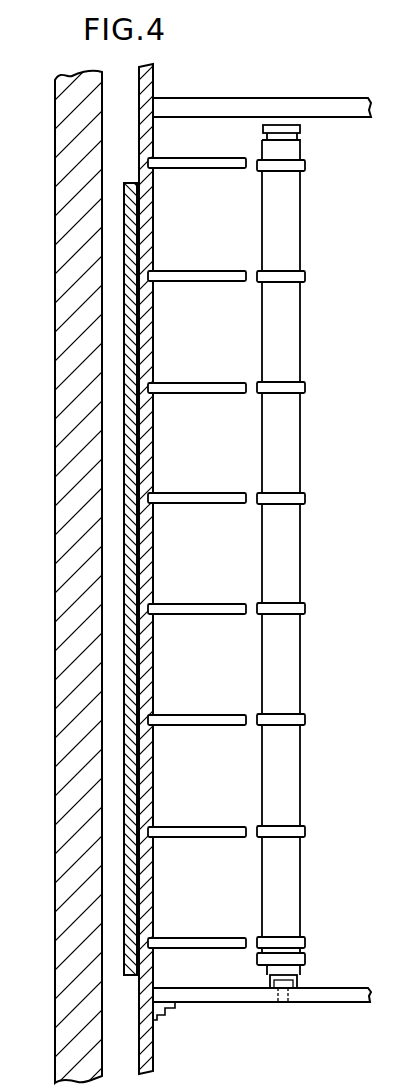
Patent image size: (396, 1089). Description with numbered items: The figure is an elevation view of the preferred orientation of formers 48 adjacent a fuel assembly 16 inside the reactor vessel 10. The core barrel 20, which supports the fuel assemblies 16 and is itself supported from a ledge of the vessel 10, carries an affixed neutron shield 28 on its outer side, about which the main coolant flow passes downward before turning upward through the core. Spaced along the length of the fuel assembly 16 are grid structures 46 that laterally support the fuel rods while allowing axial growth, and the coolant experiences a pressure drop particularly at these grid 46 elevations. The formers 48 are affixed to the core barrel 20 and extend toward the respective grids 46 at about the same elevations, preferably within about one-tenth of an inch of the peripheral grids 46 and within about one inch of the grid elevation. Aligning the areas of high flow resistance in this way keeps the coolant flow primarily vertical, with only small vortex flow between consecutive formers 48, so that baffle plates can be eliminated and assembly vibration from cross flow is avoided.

The reactor vessel 10 is at (62, 312).
The fuel assembly 16 is at (293, 459).
The core barrel 20 is at (148, 218).
The neutron shield 28 is at (125, 438).
The grid structure 46 is at (307, 608).
The former 48 is at (193, 714).